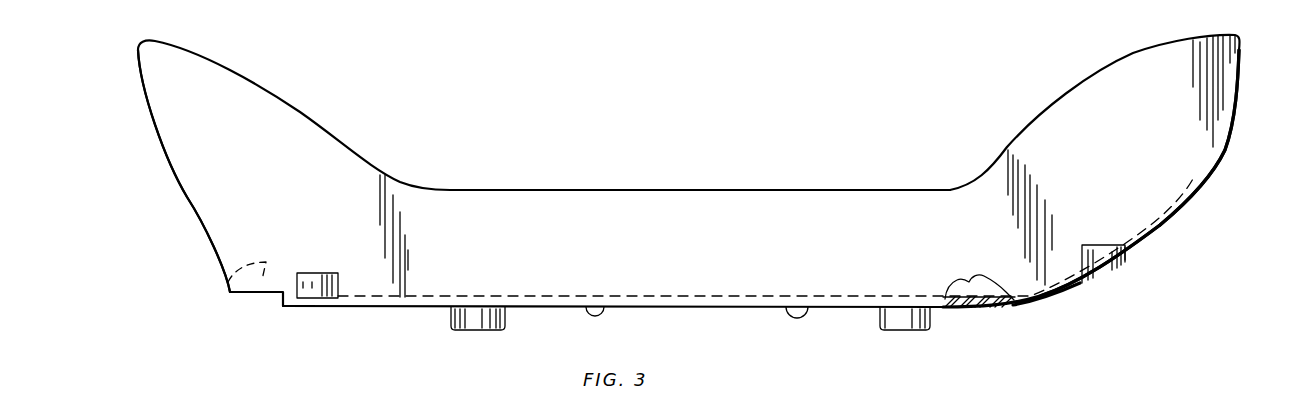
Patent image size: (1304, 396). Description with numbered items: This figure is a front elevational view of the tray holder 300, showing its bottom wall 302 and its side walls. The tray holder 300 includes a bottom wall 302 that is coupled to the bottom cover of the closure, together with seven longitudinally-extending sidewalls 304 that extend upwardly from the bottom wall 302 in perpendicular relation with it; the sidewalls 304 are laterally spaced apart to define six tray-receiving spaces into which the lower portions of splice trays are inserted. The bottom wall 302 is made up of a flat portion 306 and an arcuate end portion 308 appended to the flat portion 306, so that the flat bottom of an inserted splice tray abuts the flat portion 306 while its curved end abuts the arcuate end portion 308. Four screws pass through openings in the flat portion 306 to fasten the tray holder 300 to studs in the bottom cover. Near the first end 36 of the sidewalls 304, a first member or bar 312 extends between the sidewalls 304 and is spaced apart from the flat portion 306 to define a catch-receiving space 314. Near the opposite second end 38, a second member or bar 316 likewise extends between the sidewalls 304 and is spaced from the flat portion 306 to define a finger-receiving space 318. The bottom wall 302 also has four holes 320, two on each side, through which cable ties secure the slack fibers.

The tray holder 300 is at (756, 160).
The bottom wall 302 is at (418, 318).
The sidewalls 304 is at (552, 222).
The flat portion 306 is at (980, 310).
The arcuate end portion 308 is at (1143, 255).
The first member or bar 312 is at (226, 283).
The catch-receiving space 314 is at (259, 296).
The second member or bar 316 is at (1232, 38).
The finger-receiving space 318 is at (1241, 103).
The holes 320 is at (318, 273).
The first end 36 is at (191, 234).
The second end 38 is at (1128, 299).